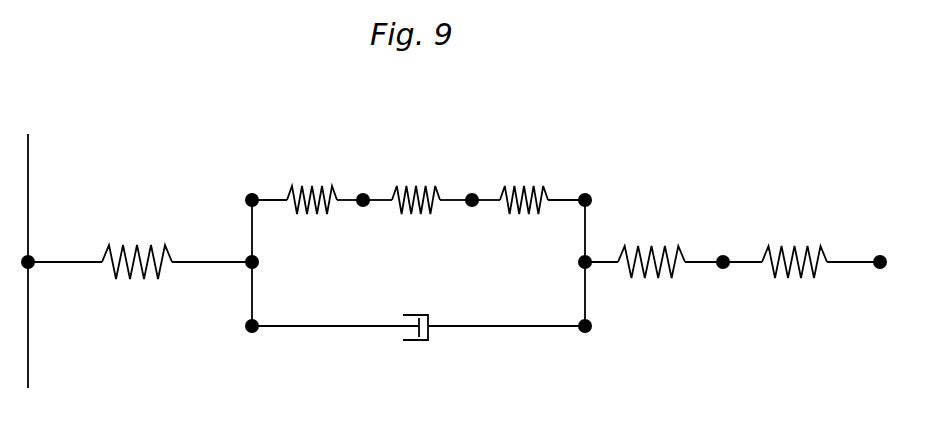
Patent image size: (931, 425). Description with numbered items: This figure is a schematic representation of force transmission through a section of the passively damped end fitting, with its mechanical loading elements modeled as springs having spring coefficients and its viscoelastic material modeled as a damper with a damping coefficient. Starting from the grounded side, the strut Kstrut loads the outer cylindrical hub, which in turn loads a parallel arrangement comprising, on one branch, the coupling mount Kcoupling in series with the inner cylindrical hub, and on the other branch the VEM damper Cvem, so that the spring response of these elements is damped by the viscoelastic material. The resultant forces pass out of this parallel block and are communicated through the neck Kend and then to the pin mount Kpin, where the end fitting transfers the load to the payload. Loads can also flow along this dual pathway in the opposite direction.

The strut spring coefficient Kstrut is at (140, 279).
The coupling mount spring coefficient Kcoupling is at (421, 214).
The VEM damping coefficient Cvem is at (418, 346).
The neck spring coefficient Kend is at (657, 243).
The pin mount spring coefficient Kpin is at (805, 242).